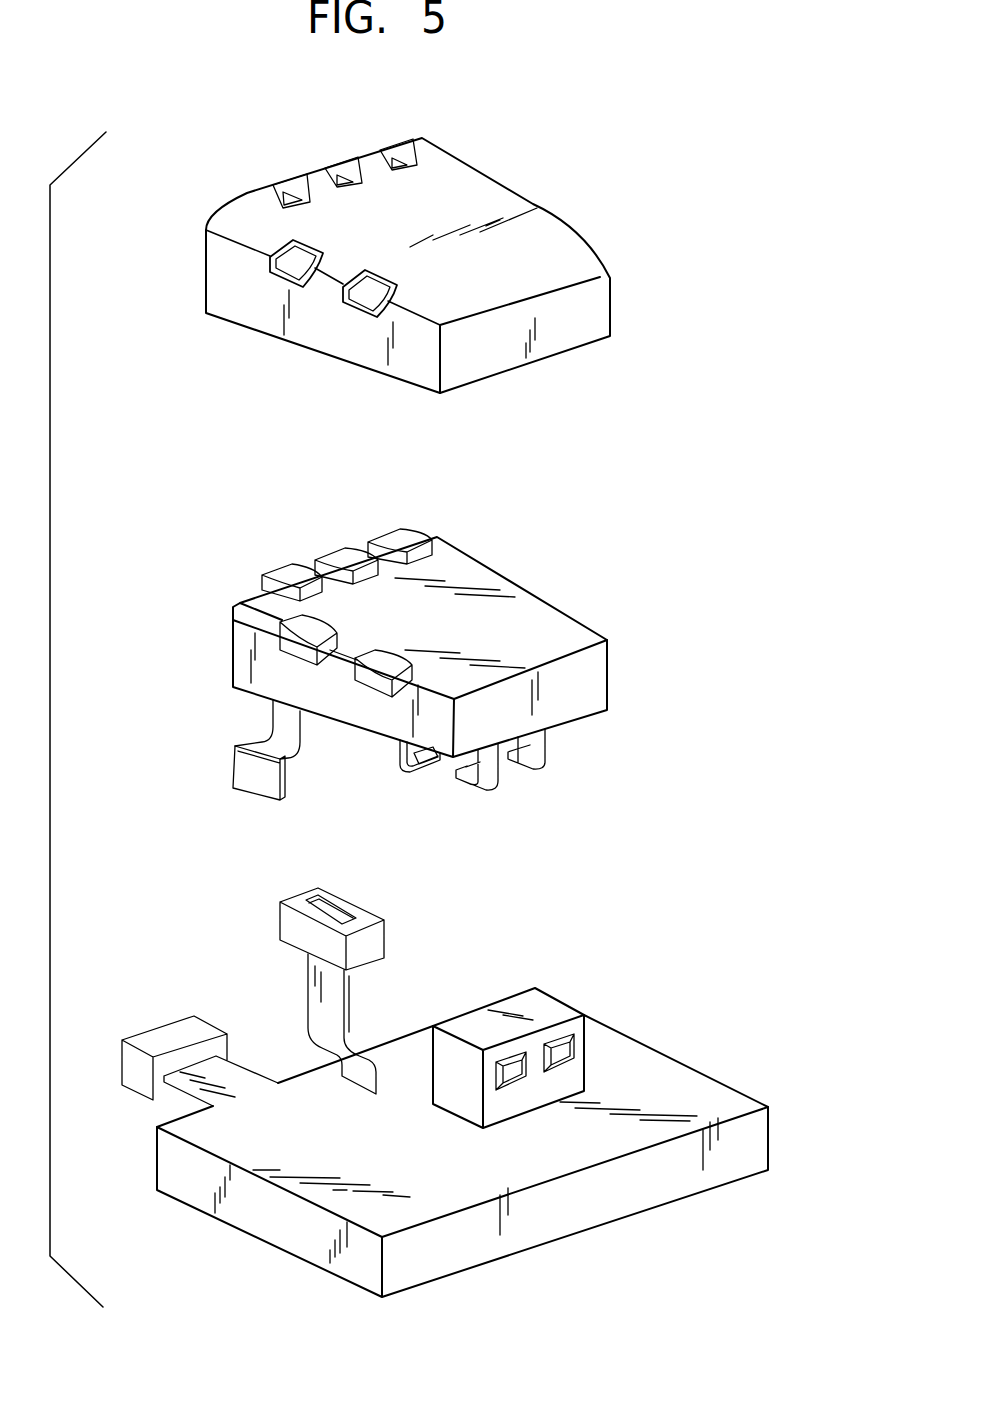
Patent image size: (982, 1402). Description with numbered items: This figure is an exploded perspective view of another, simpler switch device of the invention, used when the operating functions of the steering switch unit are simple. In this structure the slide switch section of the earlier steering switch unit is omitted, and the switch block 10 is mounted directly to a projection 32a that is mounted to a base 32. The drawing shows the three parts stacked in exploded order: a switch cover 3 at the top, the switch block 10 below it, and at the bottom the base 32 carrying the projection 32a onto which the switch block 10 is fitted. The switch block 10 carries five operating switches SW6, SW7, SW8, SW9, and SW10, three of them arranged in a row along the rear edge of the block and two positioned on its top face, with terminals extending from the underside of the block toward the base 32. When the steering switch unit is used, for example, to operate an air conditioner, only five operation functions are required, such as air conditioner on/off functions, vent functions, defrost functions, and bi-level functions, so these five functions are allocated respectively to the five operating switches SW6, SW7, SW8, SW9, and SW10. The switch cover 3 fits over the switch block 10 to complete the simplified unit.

The switch cover 3 is at (555, 238).
The switch block 10 is at (523, 617).
The operating switch SW6 is at (285, 568).
The operating switch SW7 is at (342, 550).
The operating switch SW8 is at (398, 538).
The operating switch SW9 is at (302, 642).
The operating switch SW10 is at (382, 665).
The base 32 is at (638, 1082).
The projection 32a is at (570, 998).